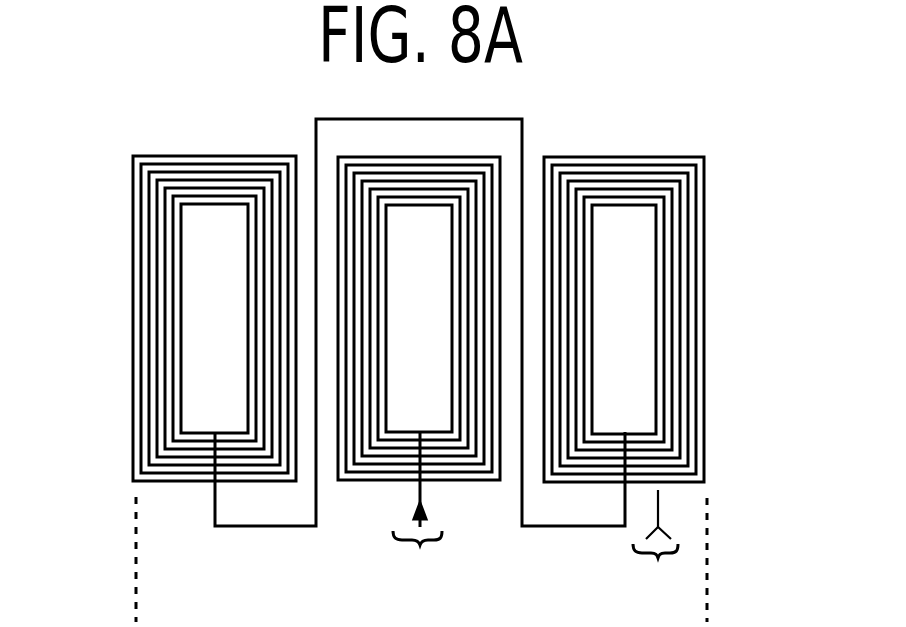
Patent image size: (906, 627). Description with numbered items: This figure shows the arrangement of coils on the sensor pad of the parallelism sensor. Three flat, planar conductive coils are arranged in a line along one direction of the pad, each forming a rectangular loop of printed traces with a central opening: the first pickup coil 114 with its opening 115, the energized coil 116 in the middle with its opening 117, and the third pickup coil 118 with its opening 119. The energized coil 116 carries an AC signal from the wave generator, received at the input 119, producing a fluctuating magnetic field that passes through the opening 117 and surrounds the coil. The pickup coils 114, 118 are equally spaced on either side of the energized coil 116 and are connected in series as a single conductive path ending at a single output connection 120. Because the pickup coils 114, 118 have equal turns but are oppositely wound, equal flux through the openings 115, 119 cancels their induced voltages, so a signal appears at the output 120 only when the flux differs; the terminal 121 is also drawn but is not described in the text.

The first pickup coil 114 is at (156, 389).
The central opening of first pickup coil 115 is at (236, 335).
The energized coil 116 is at (420, 348).
The central opening of energized coil 117 is at (444, 335).
The third pickup coil 118 is at (663, 389).
The central opening of third pickup coil 119 is at (647, 335).
The output connection 120 is at (658, 541).
The input terminal / current direction 121 is at (420, 570).